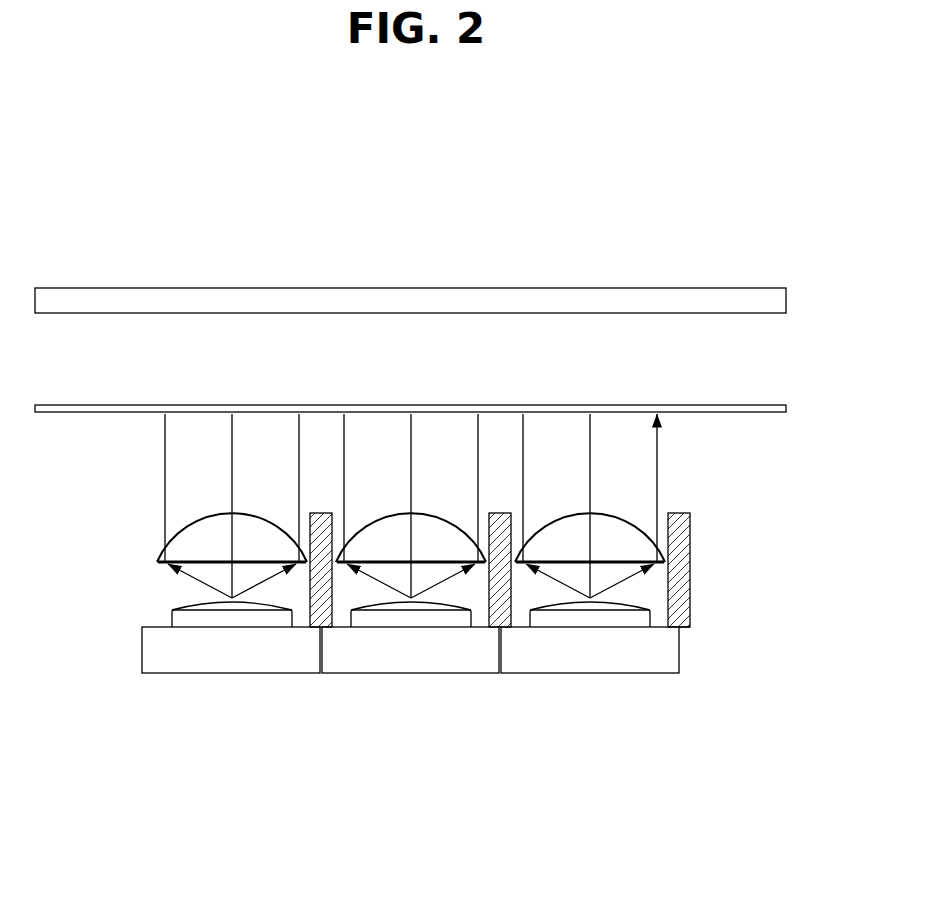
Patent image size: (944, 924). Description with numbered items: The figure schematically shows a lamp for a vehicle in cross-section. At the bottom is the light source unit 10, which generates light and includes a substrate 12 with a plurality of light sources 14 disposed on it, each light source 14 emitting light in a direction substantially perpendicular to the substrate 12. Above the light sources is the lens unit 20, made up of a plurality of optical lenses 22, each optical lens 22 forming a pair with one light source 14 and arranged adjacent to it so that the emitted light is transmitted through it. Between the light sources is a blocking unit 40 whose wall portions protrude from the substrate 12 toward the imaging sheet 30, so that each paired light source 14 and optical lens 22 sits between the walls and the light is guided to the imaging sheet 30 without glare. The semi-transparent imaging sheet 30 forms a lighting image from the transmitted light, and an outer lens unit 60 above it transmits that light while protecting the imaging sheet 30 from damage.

The light source unit 10 is at (416, 720).
The substrate 12 is at (177, 663).
The light source 14 is at (411, 666).
The lens unit 20 is at (359, 500).
The optical lens 22 is at (573, 523).
The imaging sheet 30 is at (718, 405).
The blocking unit 40 is at (318, 628).
The outer lens unit 60 is at (718, 288).